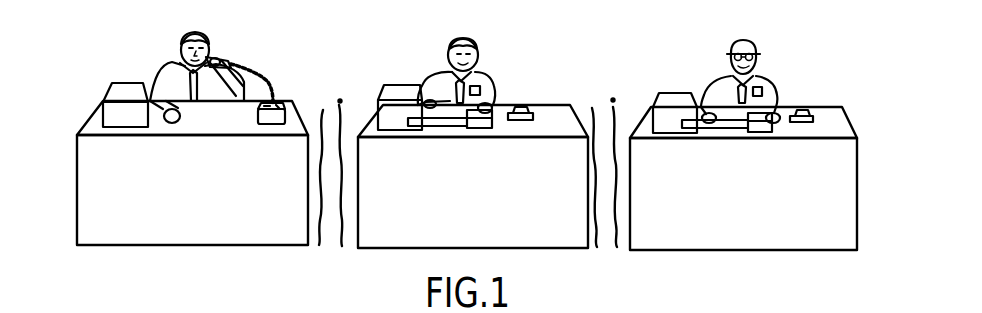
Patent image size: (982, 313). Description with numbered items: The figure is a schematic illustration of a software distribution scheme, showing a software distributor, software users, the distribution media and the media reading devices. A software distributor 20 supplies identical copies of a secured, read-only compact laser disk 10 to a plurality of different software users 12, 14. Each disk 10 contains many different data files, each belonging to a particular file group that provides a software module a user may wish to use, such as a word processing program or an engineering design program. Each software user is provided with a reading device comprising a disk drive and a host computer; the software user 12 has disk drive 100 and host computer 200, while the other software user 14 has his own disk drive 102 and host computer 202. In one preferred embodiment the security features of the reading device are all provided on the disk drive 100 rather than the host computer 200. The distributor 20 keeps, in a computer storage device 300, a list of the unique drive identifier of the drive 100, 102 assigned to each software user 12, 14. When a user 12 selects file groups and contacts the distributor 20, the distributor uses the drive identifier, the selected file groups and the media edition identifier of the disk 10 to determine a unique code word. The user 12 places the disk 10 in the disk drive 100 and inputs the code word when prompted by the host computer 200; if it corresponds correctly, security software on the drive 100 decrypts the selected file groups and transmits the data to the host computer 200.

The compact laser disk 10 is at (524, 106).
The software user 12 is at (474, 48).
The software user 14 is at (758, 51).
The software distributor 20 is at (206, 44).
The disk drive 100 is at (488, 106).
The disk drive 102 is at (768, 108).
The host computer 200 is at (384, 85).
The document box 202 is at (668, 96).
The computer storage device 300 is at (115, 112).